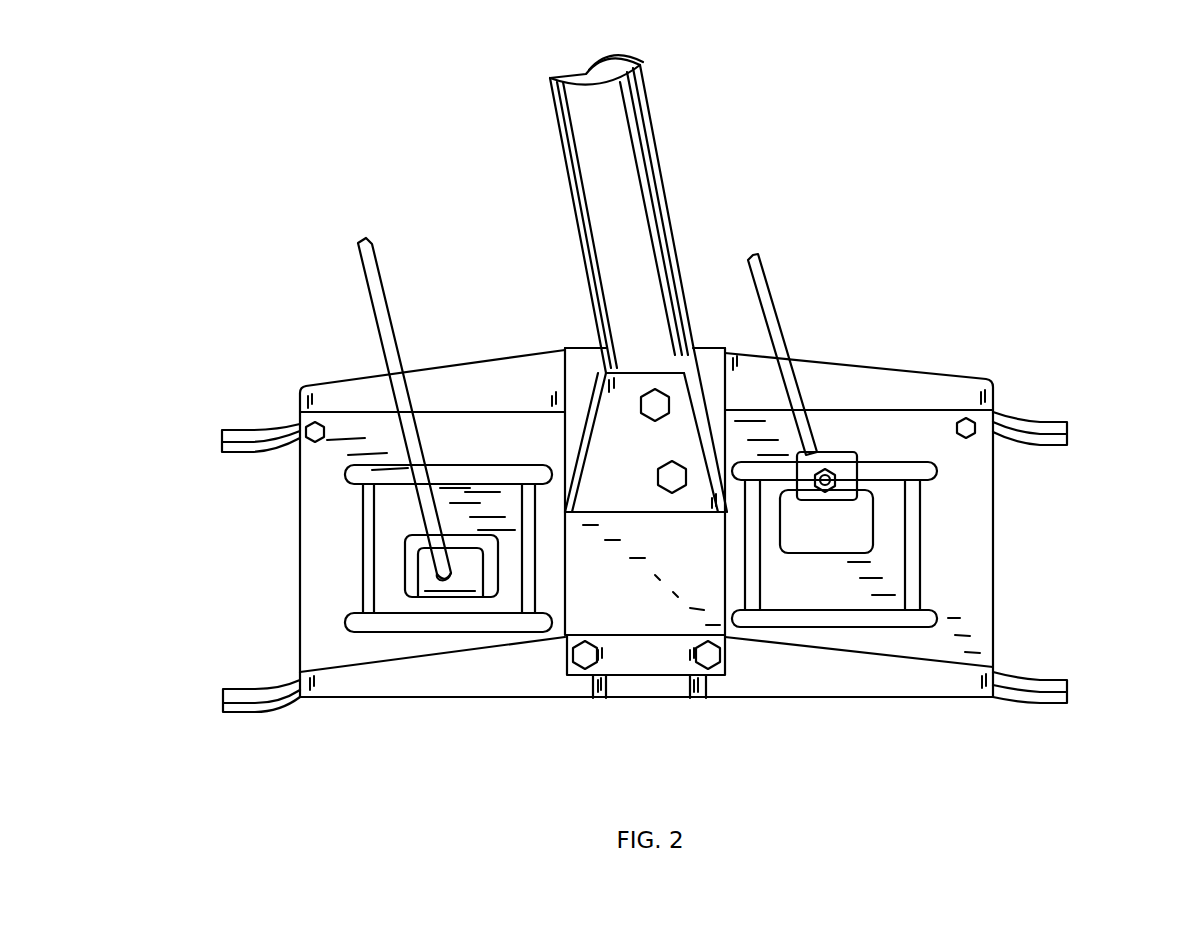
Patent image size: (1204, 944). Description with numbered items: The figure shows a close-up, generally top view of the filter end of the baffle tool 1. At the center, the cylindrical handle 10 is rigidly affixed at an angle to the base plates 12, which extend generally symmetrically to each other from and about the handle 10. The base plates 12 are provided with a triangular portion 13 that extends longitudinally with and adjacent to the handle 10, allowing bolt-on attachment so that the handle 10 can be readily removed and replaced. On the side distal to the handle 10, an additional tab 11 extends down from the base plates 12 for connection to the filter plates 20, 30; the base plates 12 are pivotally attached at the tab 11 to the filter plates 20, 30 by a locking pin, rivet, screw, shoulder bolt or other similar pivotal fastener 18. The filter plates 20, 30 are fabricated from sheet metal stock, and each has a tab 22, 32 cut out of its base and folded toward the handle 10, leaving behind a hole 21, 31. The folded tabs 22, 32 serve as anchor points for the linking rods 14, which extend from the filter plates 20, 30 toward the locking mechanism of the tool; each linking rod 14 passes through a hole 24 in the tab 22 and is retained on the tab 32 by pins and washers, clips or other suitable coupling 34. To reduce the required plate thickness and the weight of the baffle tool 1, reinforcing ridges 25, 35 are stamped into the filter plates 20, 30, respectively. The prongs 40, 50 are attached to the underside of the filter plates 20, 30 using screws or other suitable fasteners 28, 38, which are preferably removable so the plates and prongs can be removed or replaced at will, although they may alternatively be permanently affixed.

The baffle tool 1 is at (768, 162).
The handle 10 is at (586, 170).
The tab 11 is at (651, 665).
The base plates 12 is at (623, 598).
The triangular portion 13 is at (613, 465).
The linking rods 14 is at (403, 403).
The pivotal fastener 18 is at (586, 668).
The filter plate 20 is at (299, 658).
The hole 21 is at (414, 550).
The tab 22 is at (432, 583).
The hole 24 is at (452, 590).
The reinforcing ridge 25 is at (370, 503).
The fastener 28 is at (304, 432).
The filter plate 30 is at (996, 635).
The hole 31 is at (848, 538).
The tab 32 is at (845, 470).
The coupling 34 is at (840, 483).
The reinforcing ridge 35 is at (913, 587).
The fastener 38 is at (976, 424).
The prong 40 is at (240, 710).
The prong 50 is at (1050, 703).